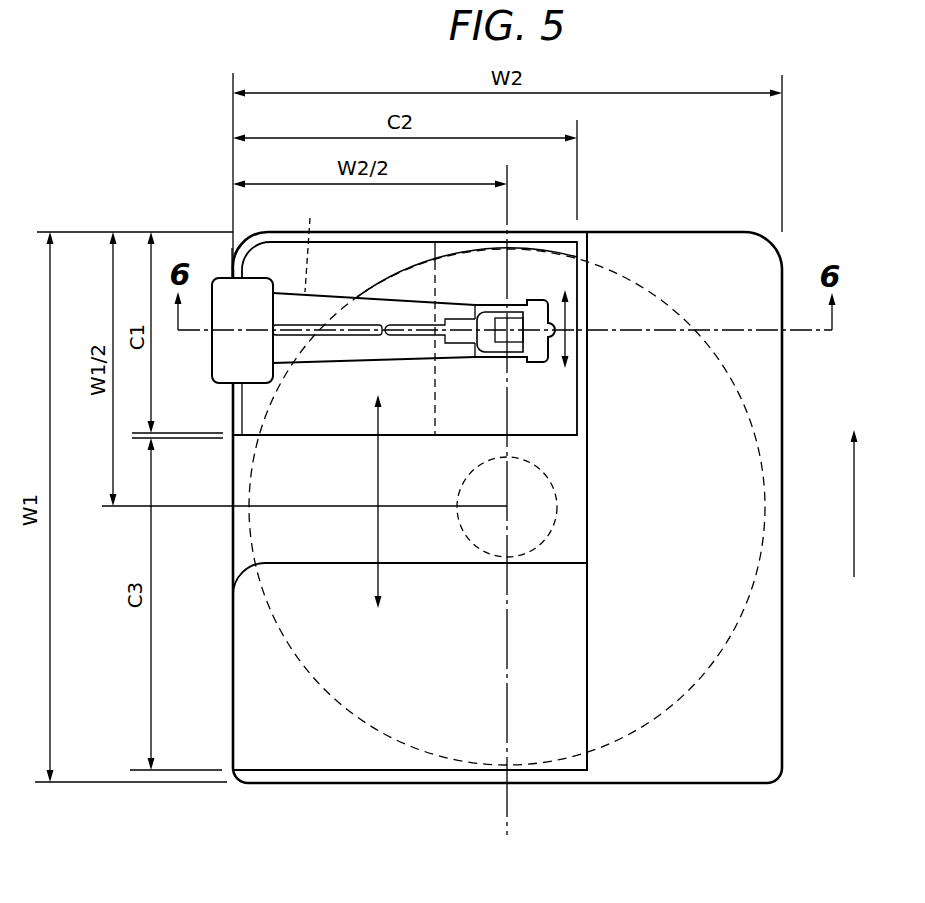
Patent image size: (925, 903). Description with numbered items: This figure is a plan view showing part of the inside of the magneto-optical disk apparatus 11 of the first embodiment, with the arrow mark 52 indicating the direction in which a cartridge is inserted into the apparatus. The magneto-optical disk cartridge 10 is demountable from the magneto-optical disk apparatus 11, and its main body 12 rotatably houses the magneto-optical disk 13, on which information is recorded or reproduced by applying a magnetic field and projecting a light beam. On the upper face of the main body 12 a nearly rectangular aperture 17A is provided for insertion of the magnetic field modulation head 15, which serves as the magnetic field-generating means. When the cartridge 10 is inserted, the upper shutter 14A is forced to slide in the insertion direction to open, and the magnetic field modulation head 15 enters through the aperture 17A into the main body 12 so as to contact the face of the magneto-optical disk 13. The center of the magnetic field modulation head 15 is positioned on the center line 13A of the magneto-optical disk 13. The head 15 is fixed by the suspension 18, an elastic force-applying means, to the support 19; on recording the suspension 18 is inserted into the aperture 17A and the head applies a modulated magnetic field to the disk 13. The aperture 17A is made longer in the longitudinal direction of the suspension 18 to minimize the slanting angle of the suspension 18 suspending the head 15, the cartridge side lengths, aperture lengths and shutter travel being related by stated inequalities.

The magneto-optical disk cartridge 10 is at (797, 750).
The magneto-optical disk apparatus 11 is at (203, 341).
The main body 12 is at (598, 765).
The magneto-optical disk 13 is at (380, 282).
The center line 13A is at (503, 816).
The upper shutter 14A is at (586, 678).
The magnetic field modulation head 15 is at (513, 323).
The aperture 17A is at (280, 434).
The suspension 18 is at (307, 243).
The support 19 is at (220, 277).
The arrow mark 52 is at (854, 553).